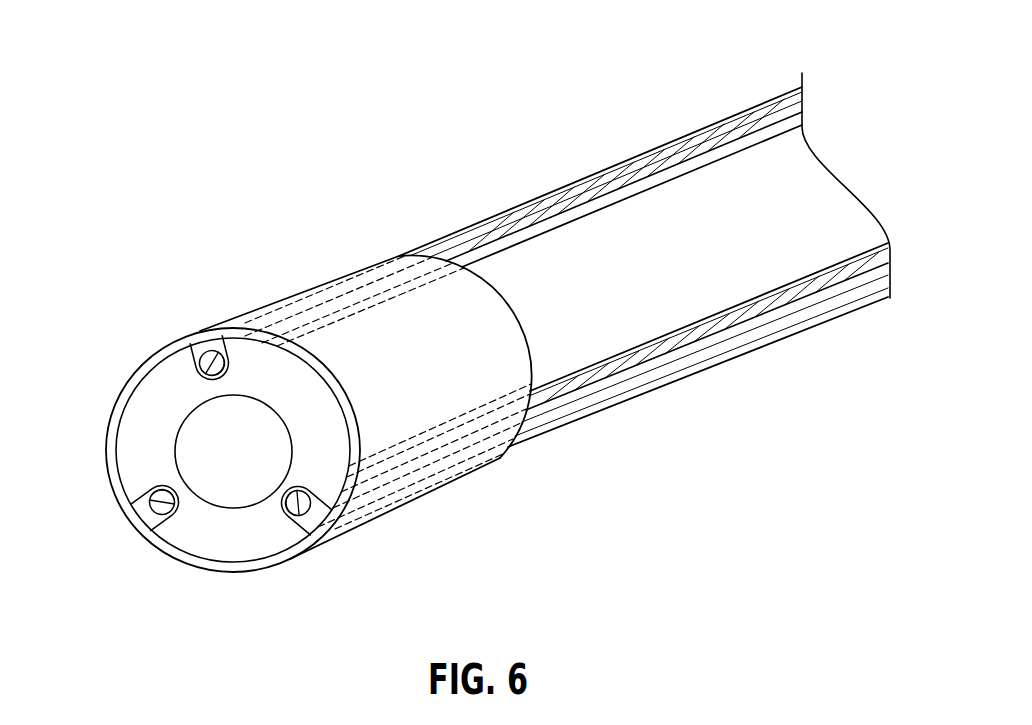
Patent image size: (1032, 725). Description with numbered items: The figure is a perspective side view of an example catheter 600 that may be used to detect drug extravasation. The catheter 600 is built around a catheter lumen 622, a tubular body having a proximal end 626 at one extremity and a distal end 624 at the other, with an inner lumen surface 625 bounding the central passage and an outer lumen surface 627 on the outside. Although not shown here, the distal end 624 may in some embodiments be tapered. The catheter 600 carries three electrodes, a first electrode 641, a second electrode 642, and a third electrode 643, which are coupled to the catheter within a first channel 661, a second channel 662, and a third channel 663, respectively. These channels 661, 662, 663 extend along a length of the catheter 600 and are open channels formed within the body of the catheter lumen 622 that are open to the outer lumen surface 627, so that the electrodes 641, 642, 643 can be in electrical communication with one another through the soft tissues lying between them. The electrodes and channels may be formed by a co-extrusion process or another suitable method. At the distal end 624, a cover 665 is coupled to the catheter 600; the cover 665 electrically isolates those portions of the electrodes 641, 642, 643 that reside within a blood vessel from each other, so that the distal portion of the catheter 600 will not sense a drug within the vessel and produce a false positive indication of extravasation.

The catheter 600 is at (182, 150).
The catheter lumen 622 is at (733, 177).
The distal end 624 is at (278, 608).
The inner lumen surface 625 is at (233, 490).
The proximal end 626 is at (817, 62).
The outer lumen surface 627 is at (573, 177).
The first electrode 641 is at (485, 242).
The second electrode 642 is at (727, 338).
The third electrode 643 is at (160, 488).
The first channel 661 is at (198, 326).
The second channel 662 is at (354, 540).
The third channel 663 is at (125, 527).
The cover 665 is at (392, 333).